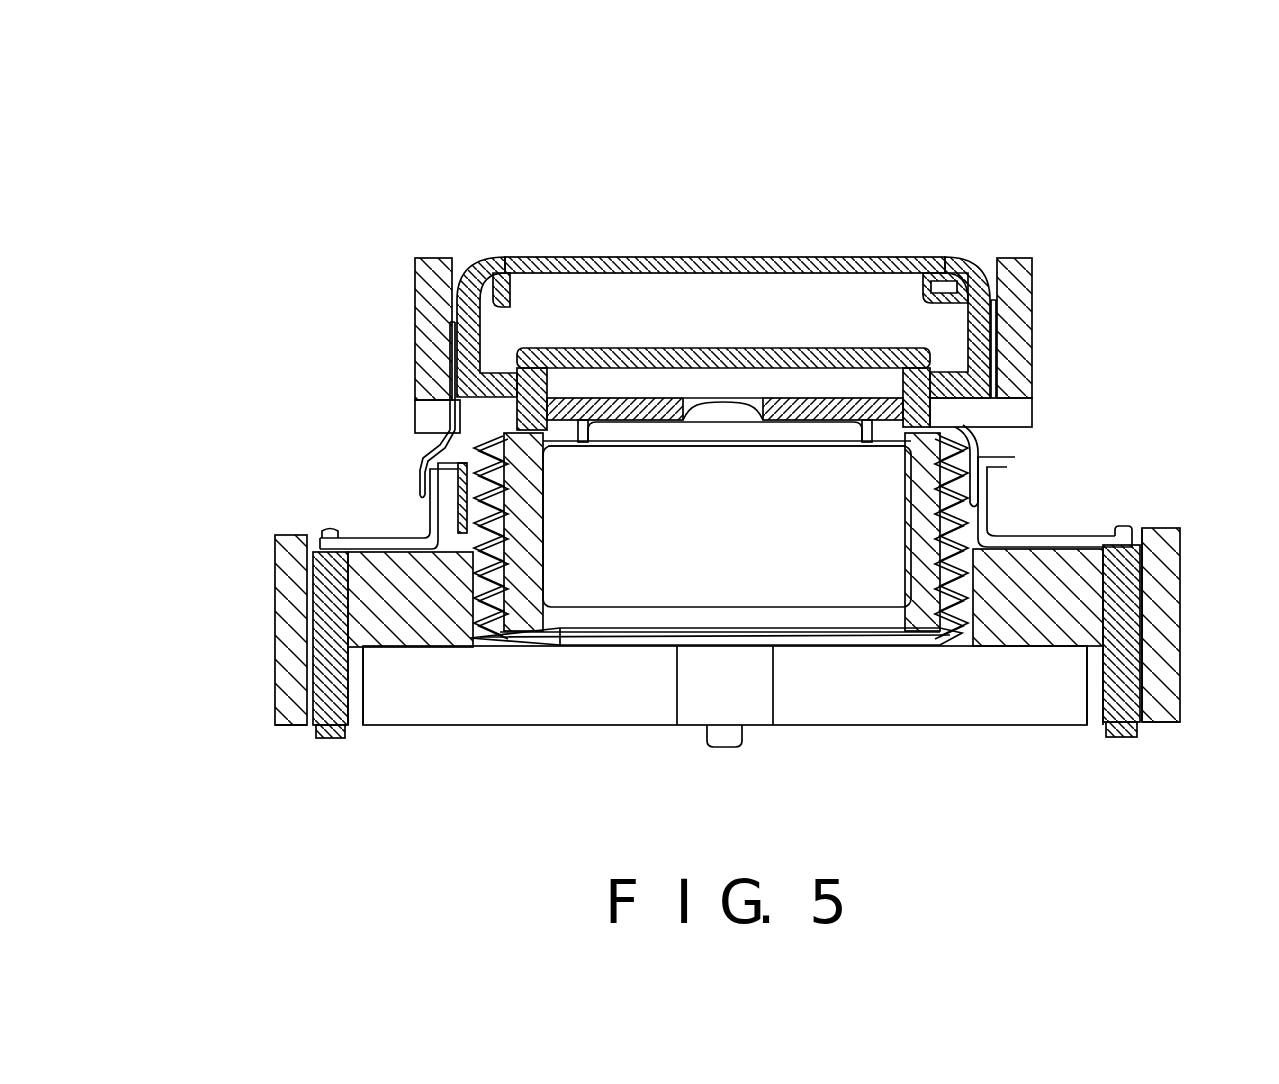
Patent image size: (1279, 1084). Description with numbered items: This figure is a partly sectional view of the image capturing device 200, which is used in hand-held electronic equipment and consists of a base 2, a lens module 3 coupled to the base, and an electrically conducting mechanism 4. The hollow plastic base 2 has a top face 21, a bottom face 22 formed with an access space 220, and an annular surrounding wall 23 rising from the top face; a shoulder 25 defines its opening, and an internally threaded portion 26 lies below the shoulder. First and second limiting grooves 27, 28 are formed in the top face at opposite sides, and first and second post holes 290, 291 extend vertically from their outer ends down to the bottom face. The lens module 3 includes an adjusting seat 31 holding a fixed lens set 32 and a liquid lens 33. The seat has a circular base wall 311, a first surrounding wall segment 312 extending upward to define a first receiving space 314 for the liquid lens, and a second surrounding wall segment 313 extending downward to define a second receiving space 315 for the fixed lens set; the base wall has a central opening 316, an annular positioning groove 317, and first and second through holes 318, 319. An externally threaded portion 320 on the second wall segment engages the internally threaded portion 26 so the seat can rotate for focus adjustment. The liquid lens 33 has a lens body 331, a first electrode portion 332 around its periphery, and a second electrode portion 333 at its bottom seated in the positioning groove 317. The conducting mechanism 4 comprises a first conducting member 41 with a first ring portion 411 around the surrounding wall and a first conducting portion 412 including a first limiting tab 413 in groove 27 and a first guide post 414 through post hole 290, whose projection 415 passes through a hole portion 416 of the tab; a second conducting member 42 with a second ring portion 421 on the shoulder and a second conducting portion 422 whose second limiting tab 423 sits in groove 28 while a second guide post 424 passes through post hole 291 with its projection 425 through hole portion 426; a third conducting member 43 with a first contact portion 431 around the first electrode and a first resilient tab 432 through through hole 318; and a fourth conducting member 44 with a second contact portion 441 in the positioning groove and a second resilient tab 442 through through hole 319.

The image capturing device 200 is at (391, 195).
The base 2 is at (262, 718).
The lens module 3 is at (435, 235).
The electrically conducting mechanism 4 is at (378, 423).
The top face 21 is at (283, 575).
The bottom face 22 is at (292, 725).
The annular surrounding wall 23 is at (1050, 525).
The shoulder 25 is at (560, 530).
The internally threaded portion 26 is at (447, 555).
The first limiting groove 27 is at (393, 553).
The second limiting groove 28 is at (1010, 600).
The adjusting seat 31 is at (408, 258).
The fixed lens set 32 is at (790, 575).
The liquid lens 33 is at (768, 235).
The access space 220 is at (645, 700).
The first post hole 290 is at (303, 690).
The second post hole 291 is at (1166, 722).
The base wall 311 is at (1033, 408).
The first surrounding wall segment 312 is at (1010, 268).
The second surrounding wall segment 313 is at (900, 600).
The first receiving space 314 is at (955, 262).
The second receiving space 315 is at (578, 620).
The central opening 316 is at (772, 402).
The annular positioning groove 317 is at (495, 390).
The first through hole 318 is at (428, 372).
The second through hole 319 is at (1060, 436).
The externally threaded portion 320 is at (512, 500).
The lens body 331 is at (695, 262).
The first electrode portion 332 is at (965, 272).
The second electrode portion 333 is at (900, 277).
The first conducting member 41 is at (425, 507).
The first ring portion 411 is at (395, 540).
The first conducting portion 412 is at (362, 612).
The first limiting tab 413 is at (417, 555).
The first guide post 414 is at (326, 737).
The projection 415 is at (330, 545).
The hole portion 416 is at (318, 595).
The second conducting member 42 is at (1000, 490).
The second ring portion 421 is at (1012, 520).
The second conducting portion 422 is at (1023, 540).
The second limiting tab 423 is at (1088, 592).
The second guide post 424 is at (1118, 737).
The projection 425 is at (1128, 530).
The hole portion 426 is at (1145, 588).
The third conducting member 43 is at (433, 360).
The first contact portion 431 is at (455, 330).
The first resilient tab 432 is at (425, 455).
The fourth conducting member 44 is at (983, 425).
The second contact portion 441 is at (990, 412).
The second resilient tab 442 is at (982, 461).